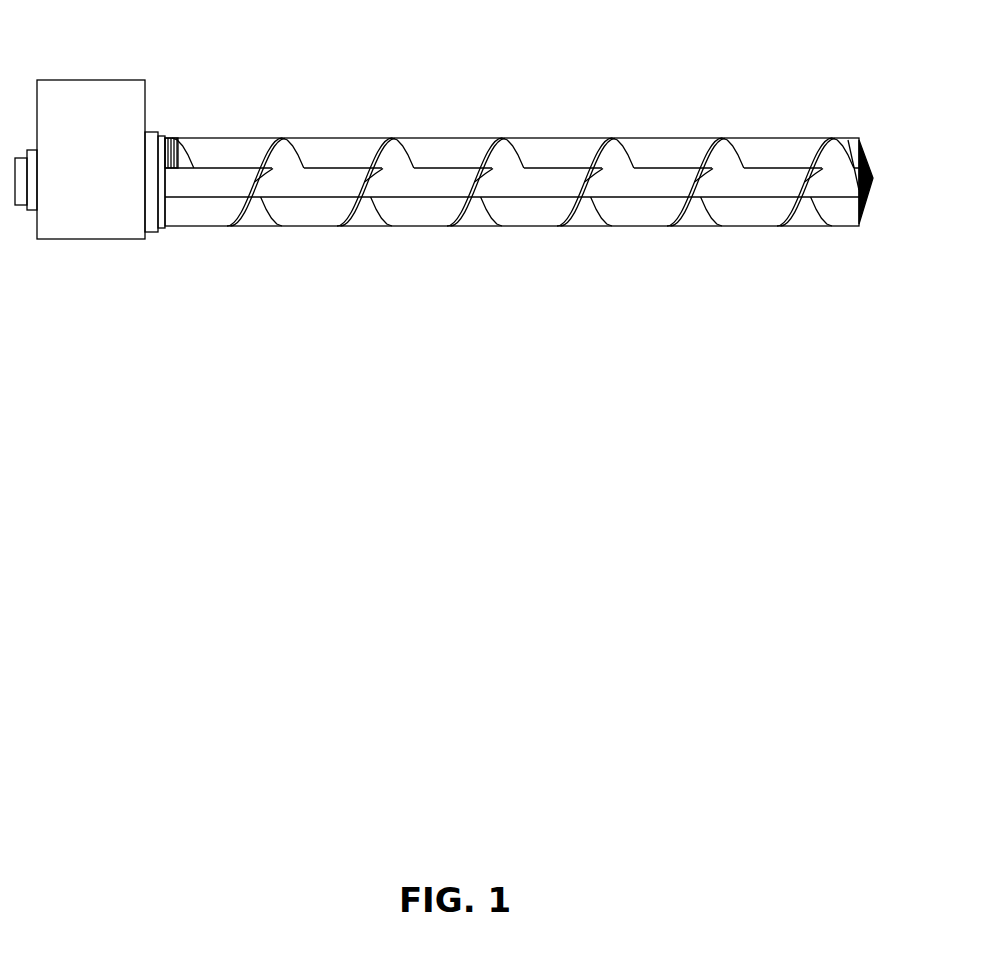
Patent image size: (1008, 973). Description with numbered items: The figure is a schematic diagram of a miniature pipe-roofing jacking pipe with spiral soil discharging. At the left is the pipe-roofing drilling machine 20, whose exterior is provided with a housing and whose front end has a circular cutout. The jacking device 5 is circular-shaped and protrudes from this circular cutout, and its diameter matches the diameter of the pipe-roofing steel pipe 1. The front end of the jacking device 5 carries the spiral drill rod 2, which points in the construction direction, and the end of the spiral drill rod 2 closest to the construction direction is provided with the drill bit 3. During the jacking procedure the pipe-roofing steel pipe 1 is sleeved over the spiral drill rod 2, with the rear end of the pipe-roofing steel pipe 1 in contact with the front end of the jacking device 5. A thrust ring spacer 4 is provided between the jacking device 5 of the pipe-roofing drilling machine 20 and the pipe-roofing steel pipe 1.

The pipe-roofing steel pipe 1 is at (325, 137).
The spiral drill rod 2 is at (510, 157).
The drill bit 3 is at (870, 160).
The thrust ring spacer 4 is at (163, 137).
The jacking device 5 is at (153, 232).
The pipe-roofing drilling machine 20 is at (55, 220).